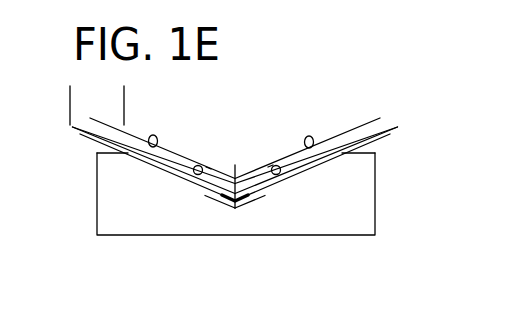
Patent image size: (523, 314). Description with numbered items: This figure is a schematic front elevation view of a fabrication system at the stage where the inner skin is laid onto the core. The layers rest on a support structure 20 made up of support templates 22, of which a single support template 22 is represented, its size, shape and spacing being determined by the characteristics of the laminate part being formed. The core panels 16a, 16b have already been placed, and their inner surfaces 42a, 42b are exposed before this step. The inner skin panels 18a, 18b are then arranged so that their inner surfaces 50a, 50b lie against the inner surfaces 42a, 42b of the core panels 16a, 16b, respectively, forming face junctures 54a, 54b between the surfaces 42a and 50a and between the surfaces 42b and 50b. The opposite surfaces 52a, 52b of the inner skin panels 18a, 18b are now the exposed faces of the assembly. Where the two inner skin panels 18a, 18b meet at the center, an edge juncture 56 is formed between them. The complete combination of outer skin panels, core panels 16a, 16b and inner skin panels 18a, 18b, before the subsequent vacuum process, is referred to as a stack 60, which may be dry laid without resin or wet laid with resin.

The core panel 16a is at (97, 140).
The core panel 16b is at (358, 134).
The inner skin panel 18a is at (197, 166).
The inner skin panel 18b is at (315, 141).
The support structure 20 is at (308, 236).
The support template 22 is at (318, 222).
The inner surface of core panel 42a is at (150, 147).
The inner surface of core panel 42b is at (318, 146).
The inner surface of inner skin panel 50a is at (208, 168).
The inner surface of inner skin panel 50b is at (272, 169).
The inner surface of inner skin panel 52a is at (193, 168).
The inner surface of inner skin panel 52b is at (345, 156).
The face juncture 54a is at (135, 147).
The face juncture 54b is at (340, 145).
The edge juncture 56 is at (235, 166).
The stack 60 is at (124, 93).